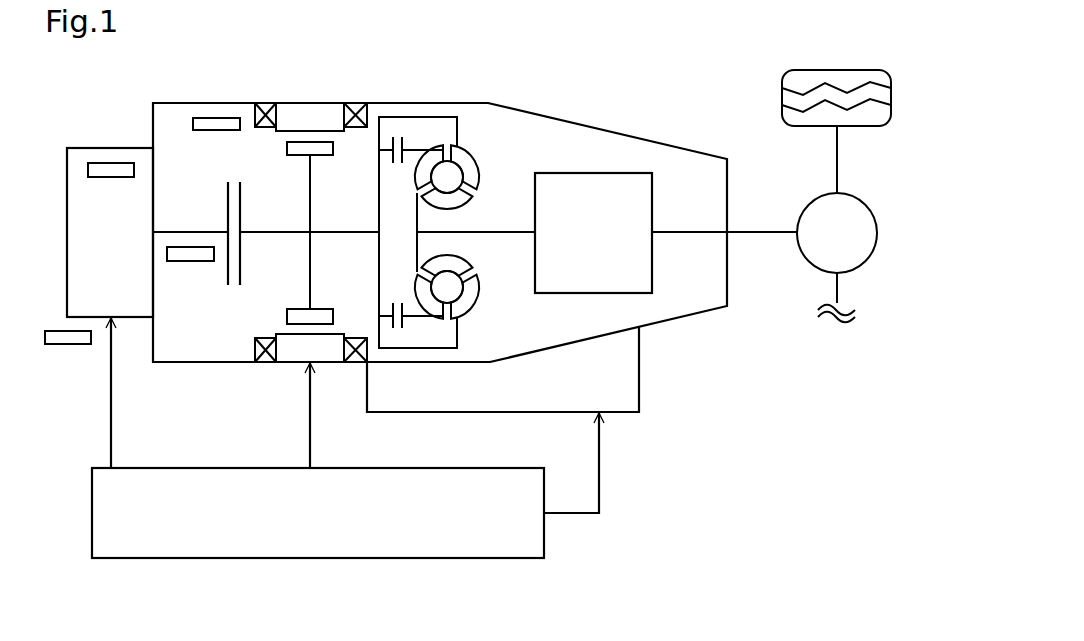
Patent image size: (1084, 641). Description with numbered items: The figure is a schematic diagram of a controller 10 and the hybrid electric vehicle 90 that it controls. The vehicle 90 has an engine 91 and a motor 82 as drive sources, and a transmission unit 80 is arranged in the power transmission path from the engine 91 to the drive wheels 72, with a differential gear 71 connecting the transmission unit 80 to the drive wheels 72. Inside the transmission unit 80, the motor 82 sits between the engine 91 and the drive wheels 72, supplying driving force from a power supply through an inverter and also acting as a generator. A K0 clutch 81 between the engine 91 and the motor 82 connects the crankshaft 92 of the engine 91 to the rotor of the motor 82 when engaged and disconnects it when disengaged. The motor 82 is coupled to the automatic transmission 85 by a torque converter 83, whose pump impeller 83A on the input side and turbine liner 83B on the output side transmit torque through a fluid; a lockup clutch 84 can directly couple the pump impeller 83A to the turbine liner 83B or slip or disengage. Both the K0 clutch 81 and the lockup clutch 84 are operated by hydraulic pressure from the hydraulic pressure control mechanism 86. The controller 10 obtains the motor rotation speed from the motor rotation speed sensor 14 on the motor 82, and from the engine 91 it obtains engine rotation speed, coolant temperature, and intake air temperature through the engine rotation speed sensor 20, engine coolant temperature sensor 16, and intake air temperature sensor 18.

The controller 10 is at (170, 468).
The motor rotation speed sensor 14 is at (220, 117).
The engine coolant temperature sensor 16 is at (103, 177).
The intake air temperature sensor 18 is at (68, 344).
The engine rotation speed sensor 20 is at (187, 261).
The differential gear 71 is at (877, 233).
The drive wheels 72 is at (891, 93).
The transmission unit 80 is at (566, 121).
The K0 clutch 81 is at (229, 288).
The motor 82 is at (303, 98).
The torque converter 83 is at (442, 348).
The pump impeller 83A is at (467, 160).
The turbine liner 83B is at (437, 148).
The lockup clutch 84 is at (398, 340).
The automatic transmission 85 is at (652, 260).
The hydraulic pressure control mechanism 86 is at (639, 366).
The hybrid electric vehicle 90 is at (717, 60).
The engine 91 is at (100, 148).
The crankshaft 92 is at (185, 232).